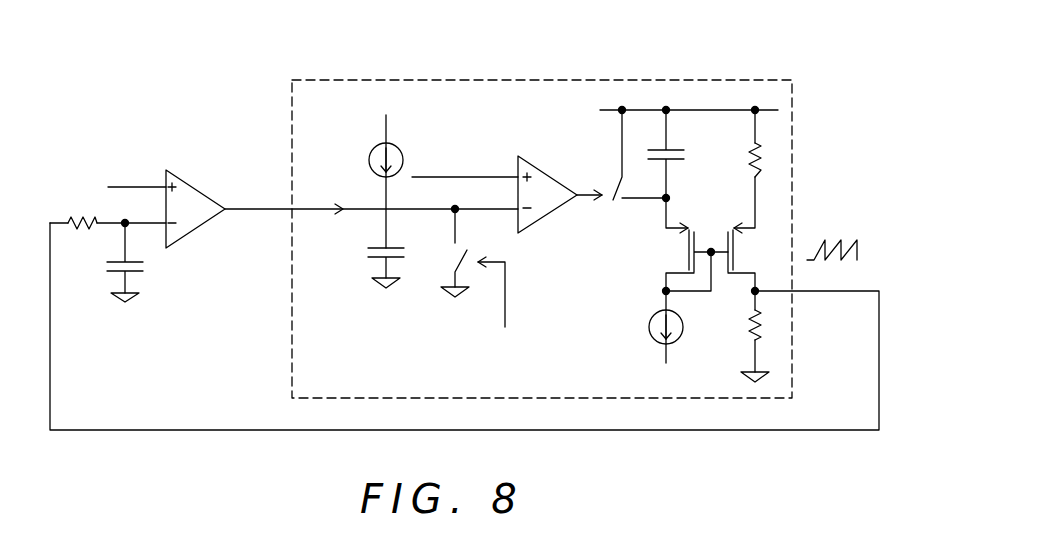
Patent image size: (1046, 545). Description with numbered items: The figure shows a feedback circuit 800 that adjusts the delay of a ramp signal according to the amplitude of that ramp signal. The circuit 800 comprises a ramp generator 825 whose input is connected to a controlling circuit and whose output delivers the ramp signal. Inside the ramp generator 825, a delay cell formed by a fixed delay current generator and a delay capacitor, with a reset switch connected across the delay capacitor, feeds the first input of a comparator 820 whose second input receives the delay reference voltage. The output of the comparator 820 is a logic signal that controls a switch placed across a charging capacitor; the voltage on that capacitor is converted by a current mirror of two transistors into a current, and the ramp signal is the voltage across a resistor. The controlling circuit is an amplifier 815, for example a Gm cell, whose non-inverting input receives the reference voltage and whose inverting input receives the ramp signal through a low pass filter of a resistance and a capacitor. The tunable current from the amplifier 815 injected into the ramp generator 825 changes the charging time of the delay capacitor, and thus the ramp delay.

The feedback circuit 800 is at (421, 26).
The amplifier 815 is at (196, 183).
The comparator 820 is at (551, 170).
The ramp generator 825 is at (796, 158).